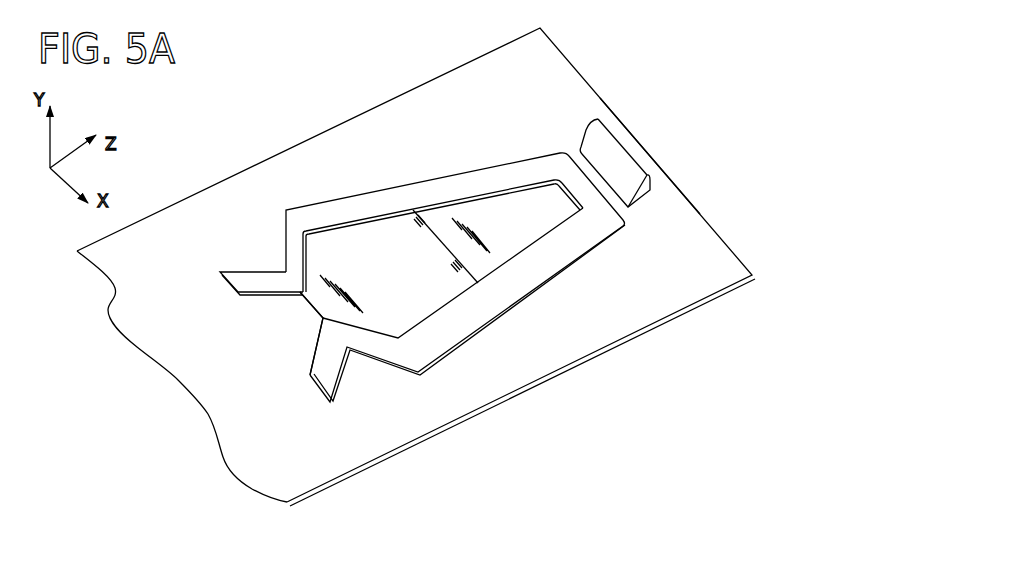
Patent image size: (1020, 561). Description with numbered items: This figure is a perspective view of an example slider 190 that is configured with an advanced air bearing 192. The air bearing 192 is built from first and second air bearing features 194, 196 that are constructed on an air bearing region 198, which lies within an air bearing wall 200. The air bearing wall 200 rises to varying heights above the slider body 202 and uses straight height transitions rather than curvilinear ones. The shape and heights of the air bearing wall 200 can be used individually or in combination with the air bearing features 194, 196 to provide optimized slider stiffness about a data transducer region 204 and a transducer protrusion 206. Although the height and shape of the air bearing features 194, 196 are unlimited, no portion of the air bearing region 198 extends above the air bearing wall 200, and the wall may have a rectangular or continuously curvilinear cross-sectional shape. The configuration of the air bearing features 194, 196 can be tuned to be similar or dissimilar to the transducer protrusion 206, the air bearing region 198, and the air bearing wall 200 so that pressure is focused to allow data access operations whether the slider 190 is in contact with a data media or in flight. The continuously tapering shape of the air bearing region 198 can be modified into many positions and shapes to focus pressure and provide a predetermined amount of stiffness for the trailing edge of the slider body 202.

The slider 190 is at (718, 46).
The advanced air bearing 192 is at (338, 192).
The first air bearing feature 194 is at (434, 313).
The second air bearing feature 196 is at (543, 181).
The air bearing region 198 is at (292, 316).
The air bearing wall 200 is at (235, 276).
The slider body 202 is at (713, 299).
The data transducer region 204 is at (648, 156).
The transducer protrusion 206 is at (590, 117).